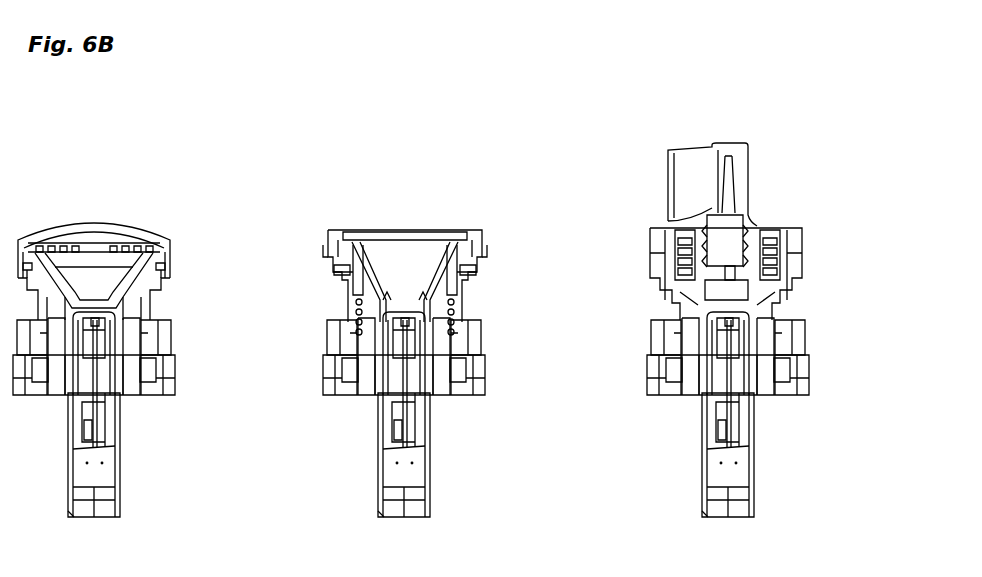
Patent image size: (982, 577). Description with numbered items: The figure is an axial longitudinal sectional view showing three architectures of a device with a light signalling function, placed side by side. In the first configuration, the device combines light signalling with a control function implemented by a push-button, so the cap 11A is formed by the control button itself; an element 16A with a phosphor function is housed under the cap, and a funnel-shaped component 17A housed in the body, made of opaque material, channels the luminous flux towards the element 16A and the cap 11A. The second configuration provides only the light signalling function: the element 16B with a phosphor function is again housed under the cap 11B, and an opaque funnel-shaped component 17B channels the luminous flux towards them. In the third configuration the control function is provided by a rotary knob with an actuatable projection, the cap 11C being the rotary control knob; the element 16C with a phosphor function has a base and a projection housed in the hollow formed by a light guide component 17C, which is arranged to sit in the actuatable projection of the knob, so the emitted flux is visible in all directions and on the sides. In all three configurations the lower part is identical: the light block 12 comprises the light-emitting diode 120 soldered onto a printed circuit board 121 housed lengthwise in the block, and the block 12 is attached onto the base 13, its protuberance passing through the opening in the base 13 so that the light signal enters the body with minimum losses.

The cap 11A is at (112, 228).
The element with a phosphor function 16A is at (137, 246).
The funnel-shaped component 17A is at (150, 280).
The cap 11B is at (393, 228).
The element with a phosphor function 16B is at (420, 230).
The funnel-shaped component 17B is at (437, 288).
The cap 11C is at (728, 149).
The element with a phosphor function 16C is at (732, 218).
The light guide component 17C is at (743, 250).
The light-emitting diode 120 is at (88, 327).
The base 13 is at (163, 383).
The printed circuit board 121 is at (98, 367).
The light block 12 is at (112, 507).